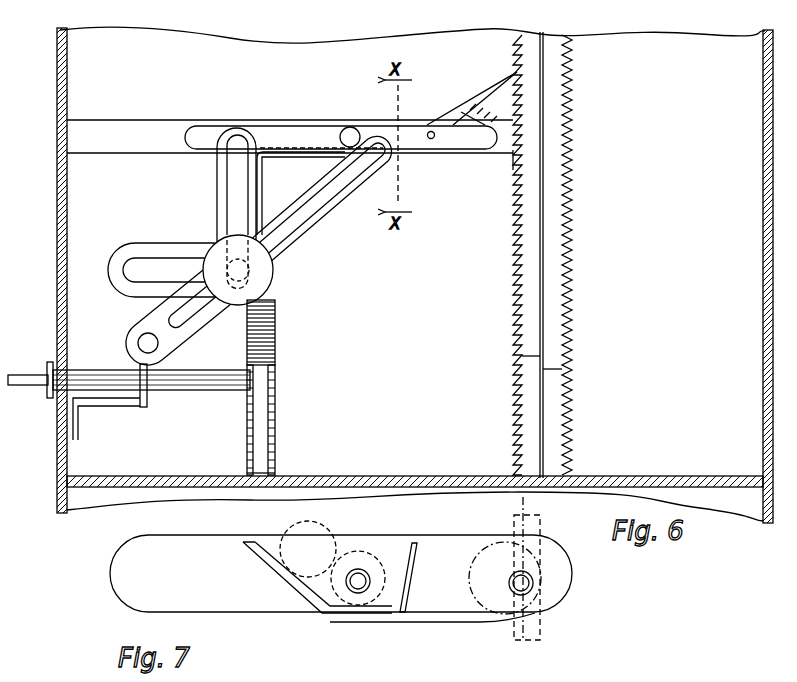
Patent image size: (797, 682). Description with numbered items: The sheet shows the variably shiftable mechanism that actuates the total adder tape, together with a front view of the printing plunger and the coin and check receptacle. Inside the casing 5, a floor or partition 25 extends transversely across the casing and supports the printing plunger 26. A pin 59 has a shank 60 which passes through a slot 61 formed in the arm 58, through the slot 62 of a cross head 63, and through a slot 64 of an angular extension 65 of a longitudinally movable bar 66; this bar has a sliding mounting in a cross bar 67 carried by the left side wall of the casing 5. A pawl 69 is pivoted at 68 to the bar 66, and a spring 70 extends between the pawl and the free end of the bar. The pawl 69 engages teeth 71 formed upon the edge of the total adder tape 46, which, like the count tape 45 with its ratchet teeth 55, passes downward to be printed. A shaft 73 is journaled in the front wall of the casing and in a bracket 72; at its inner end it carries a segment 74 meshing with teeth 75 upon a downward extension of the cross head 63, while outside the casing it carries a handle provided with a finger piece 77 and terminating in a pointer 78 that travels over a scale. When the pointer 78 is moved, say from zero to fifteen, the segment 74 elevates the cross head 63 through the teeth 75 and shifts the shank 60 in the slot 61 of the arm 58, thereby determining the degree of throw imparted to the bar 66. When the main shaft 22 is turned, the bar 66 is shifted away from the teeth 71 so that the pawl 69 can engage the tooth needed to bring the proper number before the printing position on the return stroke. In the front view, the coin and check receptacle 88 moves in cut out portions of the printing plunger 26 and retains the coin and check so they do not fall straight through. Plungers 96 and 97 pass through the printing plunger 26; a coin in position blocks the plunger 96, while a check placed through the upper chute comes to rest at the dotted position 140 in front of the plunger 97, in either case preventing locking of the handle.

In FIG. 6, the casing 5 is at (63, 224).
In FIG. 6, the main transverse shaft 22 is at (160, 348).
In FIG. 6, the floor or partition 25 is at (657, 478).
In FIG. 7, the printing plunger 26 is at (341, 571).
In FIG. 6, the count tape 45 is at (548, 370).
In FIG. 6, the total adder tape 46 is at (537, 356).
In FIG. 6, the ratchet teeth 55 is at (560, 300).
In FIG. 6, the arm 58 is at (326, 220).
In FIG. 6, the pin 59 is at (266, 270).
In FIG. 6, the shank 60 is at (262, 282).
In FIG. 6, the slot 61 is at (348, 198).
In FIG. 6, the slot of cross head 62 is at (172, 258).
In FIG. 6, the cross head 63 is at (145, 250).
In FIG. 6, the slot 64 is at (225, 178).
In FIG. 6, the angular extension 65 is at (258, 188).
In FIG. 6, the longitudinally movable bar 66 is at (465, 145).
In FIG. 6, the cross bar 67 is at (148, 127).
In FIG. 6, the pivot 68 is at (430, 139).
In FIG. 6, the pawl 69 is at (459, 106).
In FIG. 6, the spring 70 is at (485, 114).
In FIG. 6, the teeth 71 is at (520, 160).
In FIG. 6, the bracket 72 is at (140, 406).
In FIG. 6, the shaft 73 is at (207, 386).
In FIG. 6, the segment 74 is at (263, 410).
In FIG. 6, the teeth 75 is at (278, 343).
In FIG. 6, the finger piece 77 is at (22, 374).
In FIG. 6, the pointer 78 is at (48, 392).
In FIG. 7, the coin and check receptacle 88 is at (405, 578).
In FIG. 7, the plunger 96 is at (356, 593).
In FIG. 7, the plunger 97 is at (530, 583).
In FIG. 7, the check position 140 is at (505, 568).